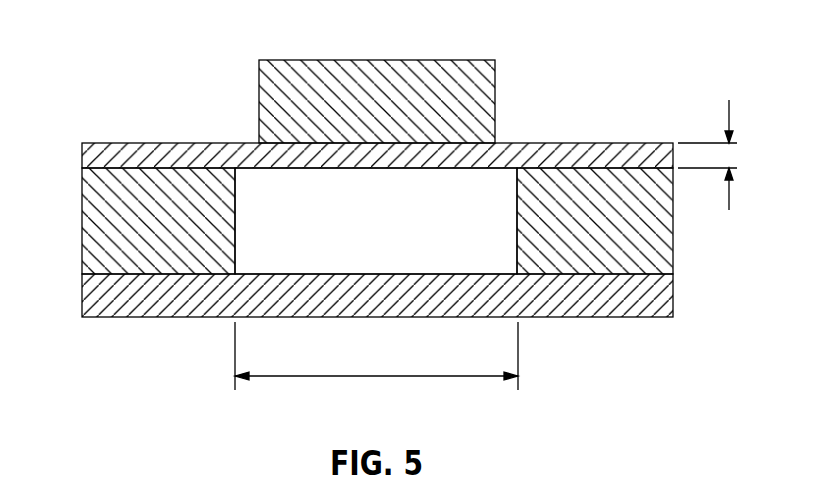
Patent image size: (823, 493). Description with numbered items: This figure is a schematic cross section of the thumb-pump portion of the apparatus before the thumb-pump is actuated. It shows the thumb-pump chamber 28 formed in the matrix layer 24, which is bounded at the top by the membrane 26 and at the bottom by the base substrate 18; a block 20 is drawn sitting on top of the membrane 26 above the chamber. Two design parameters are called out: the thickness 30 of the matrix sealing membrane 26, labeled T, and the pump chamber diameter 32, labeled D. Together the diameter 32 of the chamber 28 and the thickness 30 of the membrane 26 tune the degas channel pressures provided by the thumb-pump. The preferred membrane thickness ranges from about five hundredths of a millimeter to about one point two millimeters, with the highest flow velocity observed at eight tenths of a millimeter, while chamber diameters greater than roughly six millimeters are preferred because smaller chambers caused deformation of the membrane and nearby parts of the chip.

The base substrate 18 is at (82, 296).
The block element on top layer 20 is at (312, 60).
The matrix layer 24 is at (82, 203).
The membrane 26 is at (82, 150).
The thumb-pump chamber 28 is at (263, 188).
The thickness 30 is at (729, 105).
The pump chamber diameter 32 is at (448, 377).